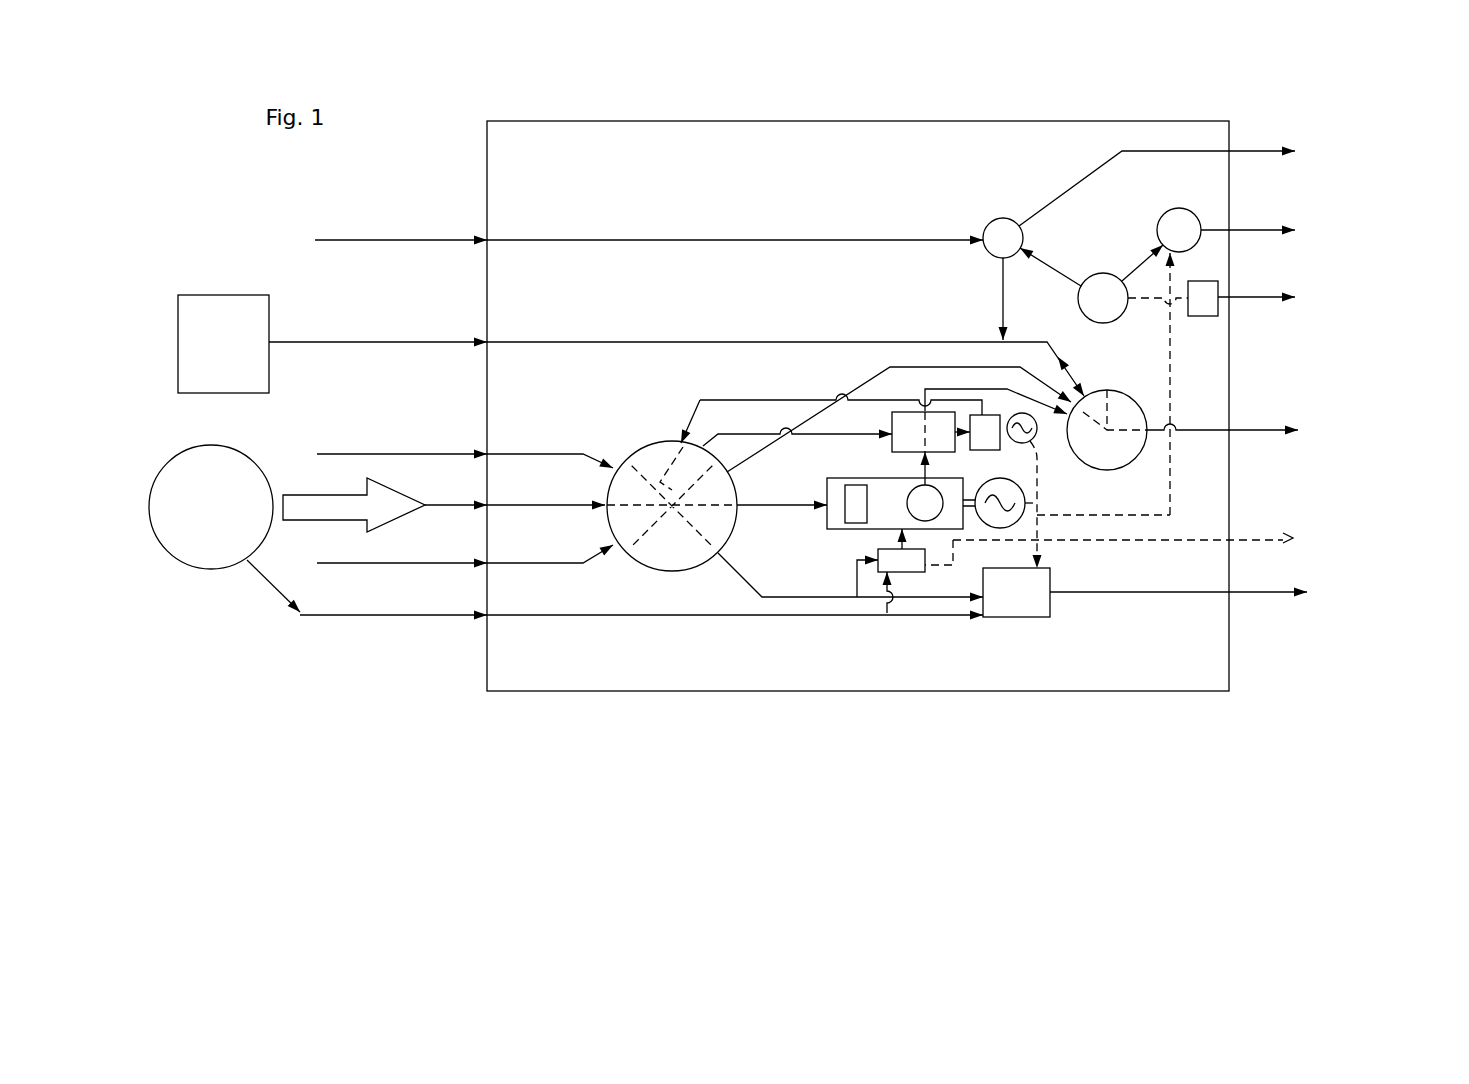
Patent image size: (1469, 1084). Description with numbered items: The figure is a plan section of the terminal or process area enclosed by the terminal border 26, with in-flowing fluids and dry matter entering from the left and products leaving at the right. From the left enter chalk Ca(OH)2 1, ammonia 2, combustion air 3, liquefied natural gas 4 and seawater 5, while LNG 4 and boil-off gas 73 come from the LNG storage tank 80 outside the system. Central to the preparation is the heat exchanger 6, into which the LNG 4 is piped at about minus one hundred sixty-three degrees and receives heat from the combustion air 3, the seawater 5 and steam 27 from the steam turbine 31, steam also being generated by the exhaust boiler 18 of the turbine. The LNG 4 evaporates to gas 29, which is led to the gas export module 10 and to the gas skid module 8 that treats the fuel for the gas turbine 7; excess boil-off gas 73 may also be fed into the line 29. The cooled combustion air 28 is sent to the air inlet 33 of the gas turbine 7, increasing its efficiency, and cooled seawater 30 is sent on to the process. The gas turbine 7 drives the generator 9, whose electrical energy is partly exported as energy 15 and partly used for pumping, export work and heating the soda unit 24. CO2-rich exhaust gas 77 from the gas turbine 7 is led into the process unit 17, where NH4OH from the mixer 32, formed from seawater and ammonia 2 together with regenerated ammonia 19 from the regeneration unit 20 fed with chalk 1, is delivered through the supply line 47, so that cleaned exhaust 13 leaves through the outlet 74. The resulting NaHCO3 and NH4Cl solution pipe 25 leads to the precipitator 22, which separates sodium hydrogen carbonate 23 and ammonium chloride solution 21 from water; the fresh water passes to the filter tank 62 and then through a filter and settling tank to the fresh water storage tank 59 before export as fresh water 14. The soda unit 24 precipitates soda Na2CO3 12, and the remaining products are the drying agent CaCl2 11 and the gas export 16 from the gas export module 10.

The chalk Ca(OH)2 1 is at (388, 240).
The ammonia NH3 2 is at (223, 344).
The combustion air 3 is at (388, 455).
The liquefied natural gas (LNG) 4 is at (444, 505).
The seawater 5 is at (451, 560).
The heat exchanger 6 is at (668, 543).
The gas turbine 7 is at (877, 503).
The gas skid module 8 is at (908, 562).
The generator 9 is at (987, 505).
The gas export module 10 is at (1018, 590).
The CaCl2 drying agent 11 is at (1175, 182).
The Na2CO3 soda 12 is at (1266, 230).
The cleaned exhaust gas 13 is at (1244, 430).
The fresh water export 14 is at (1275, 297).
The electrical energy for export 15 is at (1143, 538).
The gas export 16 is at (1197, 585).
The process unit for CO2 removal 17 is at (1106, 445).
The exhaust boiler 18 is at (912, 427).
The regenerated ammonia 19 is at (968, 238).
The process unit for regenerating NH3 20 is at (1005, 237).
The ammonium chloride solution 21 is at (1064, 267).
The precipitator 22 is at (1105, 290).
The sodium hydrogen carbonate 23 is at (1138, 262).
The process unit for precipitation of soda 24 is at (1178, 230).
The NaHCO3 and NH4Cl solution pipe 25 is at (1105, 360).
The terminal border 26 is at (1237, 391).
The steam to heat exchanger 27 is at (768, 400).
The combustion air line 28 is at (792, 505).
The gas line 29 is at (827, 597).
The seawater pipe 30 is at (828, 398).
The steam turbine 31 is at (982, 427).
The mixer 32 is at (1060, 357).
The air inlet 33 is at (482, 444).
The supply line for NH4OH 47 is at (1105, 373).
The fresh water storage tank 59 is at (1170, 384).
The filter tank 62 is at (1208, 288).
The boil-off gas 73 is at (606, 590).
The fresh water 74 is at (1298, 258).
The CO2-rich exhaust gas 77 is at (978, 415).
The LNG storage tank 80 is at (211, 507).